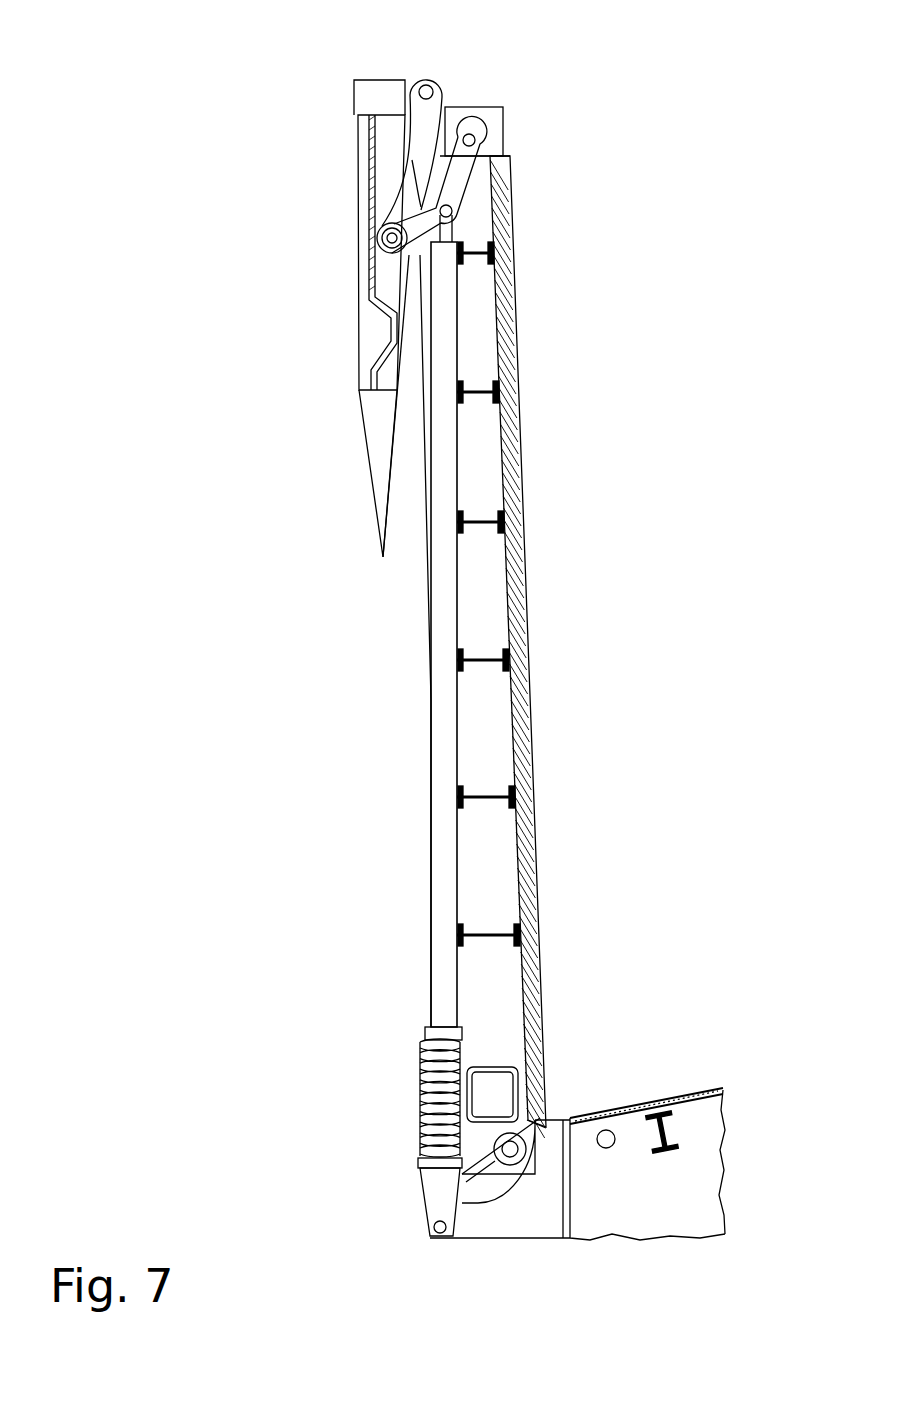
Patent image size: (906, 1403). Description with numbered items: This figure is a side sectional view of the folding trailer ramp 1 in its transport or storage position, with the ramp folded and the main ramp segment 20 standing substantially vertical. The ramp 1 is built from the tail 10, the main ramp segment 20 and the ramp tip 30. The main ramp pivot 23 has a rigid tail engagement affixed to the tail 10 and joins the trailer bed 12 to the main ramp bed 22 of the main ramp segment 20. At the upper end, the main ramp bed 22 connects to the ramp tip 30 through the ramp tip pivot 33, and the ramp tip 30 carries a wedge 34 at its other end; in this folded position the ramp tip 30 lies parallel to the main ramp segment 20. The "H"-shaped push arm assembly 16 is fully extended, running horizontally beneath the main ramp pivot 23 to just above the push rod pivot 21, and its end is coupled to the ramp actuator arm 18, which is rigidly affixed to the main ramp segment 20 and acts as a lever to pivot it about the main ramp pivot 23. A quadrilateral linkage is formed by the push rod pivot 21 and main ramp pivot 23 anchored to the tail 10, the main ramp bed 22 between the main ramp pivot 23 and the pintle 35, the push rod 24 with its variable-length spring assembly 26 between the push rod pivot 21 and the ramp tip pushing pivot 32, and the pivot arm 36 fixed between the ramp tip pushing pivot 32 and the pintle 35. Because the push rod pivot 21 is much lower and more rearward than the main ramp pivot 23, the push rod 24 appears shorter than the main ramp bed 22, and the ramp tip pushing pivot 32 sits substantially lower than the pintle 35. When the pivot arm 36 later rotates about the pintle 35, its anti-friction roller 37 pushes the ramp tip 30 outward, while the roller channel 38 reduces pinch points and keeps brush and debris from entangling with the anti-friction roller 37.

The folding trailer ramp 1 is at (657, 317).
The tail 10 is at (695, 1240).
The trailer bed 12 is at (726, 1092).
The "H"-shaped push arm assembly 16 is at (498, 1185).
The ramp actuator arm 18 is at (473, 1142).
The main ramp segment 20 is at (428, 852).
The push rod pivot 21 is at (430, 1232).
The main ramp bed 22 is at (510, 452).
The main ramp pivot 23 is at (545, 1105).
The push rod 24 is at (438, 707).
The spring assembly 26 is at (427, 1067).
The ramp tip 30 is at (356, 396).
The ramp tip pushing pivot 32 is at (452, 211).
The ramp tip pivot 33 is at (428, 86).
The wedge 34 is at (372, 525).
The pintle 35 is at (472, 128).
The pivot arm 36 is at (457, 190).
The anti-friction roller 37 is at (387, 254).
The roller channel 38 is at (383, 173).